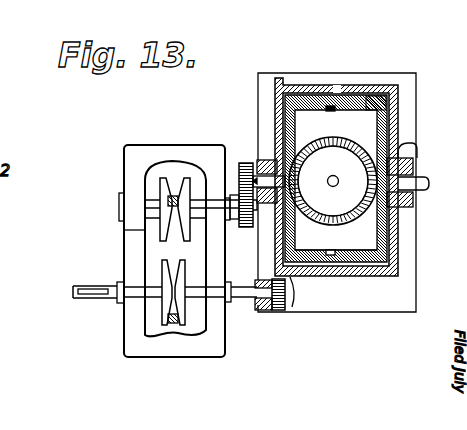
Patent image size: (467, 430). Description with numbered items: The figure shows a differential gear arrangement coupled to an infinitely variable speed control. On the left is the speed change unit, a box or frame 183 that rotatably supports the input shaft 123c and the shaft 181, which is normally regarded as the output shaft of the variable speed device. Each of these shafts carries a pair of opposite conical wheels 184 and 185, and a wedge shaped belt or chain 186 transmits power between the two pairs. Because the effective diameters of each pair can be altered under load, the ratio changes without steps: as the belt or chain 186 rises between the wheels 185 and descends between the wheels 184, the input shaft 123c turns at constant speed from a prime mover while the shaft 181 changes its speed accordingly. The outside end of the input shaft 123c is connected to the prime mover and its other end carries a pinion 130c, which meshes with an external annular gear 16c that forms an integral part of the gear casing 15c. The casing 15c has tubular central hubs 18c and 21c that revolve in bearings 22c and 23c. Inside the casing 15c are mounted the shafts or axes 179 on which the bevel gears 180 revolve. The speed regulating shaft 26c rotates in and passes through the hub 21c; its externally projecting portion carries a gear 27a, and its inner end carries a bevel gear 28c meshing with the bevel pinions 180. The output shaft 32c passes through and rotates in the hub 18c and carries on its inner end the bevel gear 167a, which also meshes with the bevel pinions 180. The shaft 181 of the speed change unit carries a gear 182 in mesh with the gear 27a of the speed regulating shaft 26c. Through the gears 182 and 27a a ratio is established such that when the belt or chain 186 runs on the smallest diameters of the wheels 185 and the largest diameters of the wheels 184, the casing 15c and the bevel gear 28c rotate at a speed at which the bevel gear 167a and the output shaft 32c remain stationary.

The gear casing 15c is at (400, 86).
The external annular gear 16c is at (280, 76).
The tubular central hub 18c is at (381, 228).
The tubular central hub 21c is at (256, 175).
The bearing 22c is at (335, 176).
The bearing 23c is at (262, 162).
The speed regulating shaft 26c is at (252, 222).
The gear 27a is at (247, 180).
The bevel gear 28c is at (288, 238).
The output shaft 32c is at (427, 188).
The input shaft 123c is at (258, 300).
The pinion 130c is at (276, 312).
The bevel gear 167a is at (369, 98).
The shafts or axes 179 is at (334, 140).
The bevel gears 180 is at (294, 188).
The shaft 181 is at (145, 195).
The gear 182 is at (236, 203).
The box or frame 183 is at (124, 256).
The conical wheels 184 is at (163, 300).
The conical wheels 185 is at (160, 228).
The wedge shaped belt or chain 186 is at (170, 323).